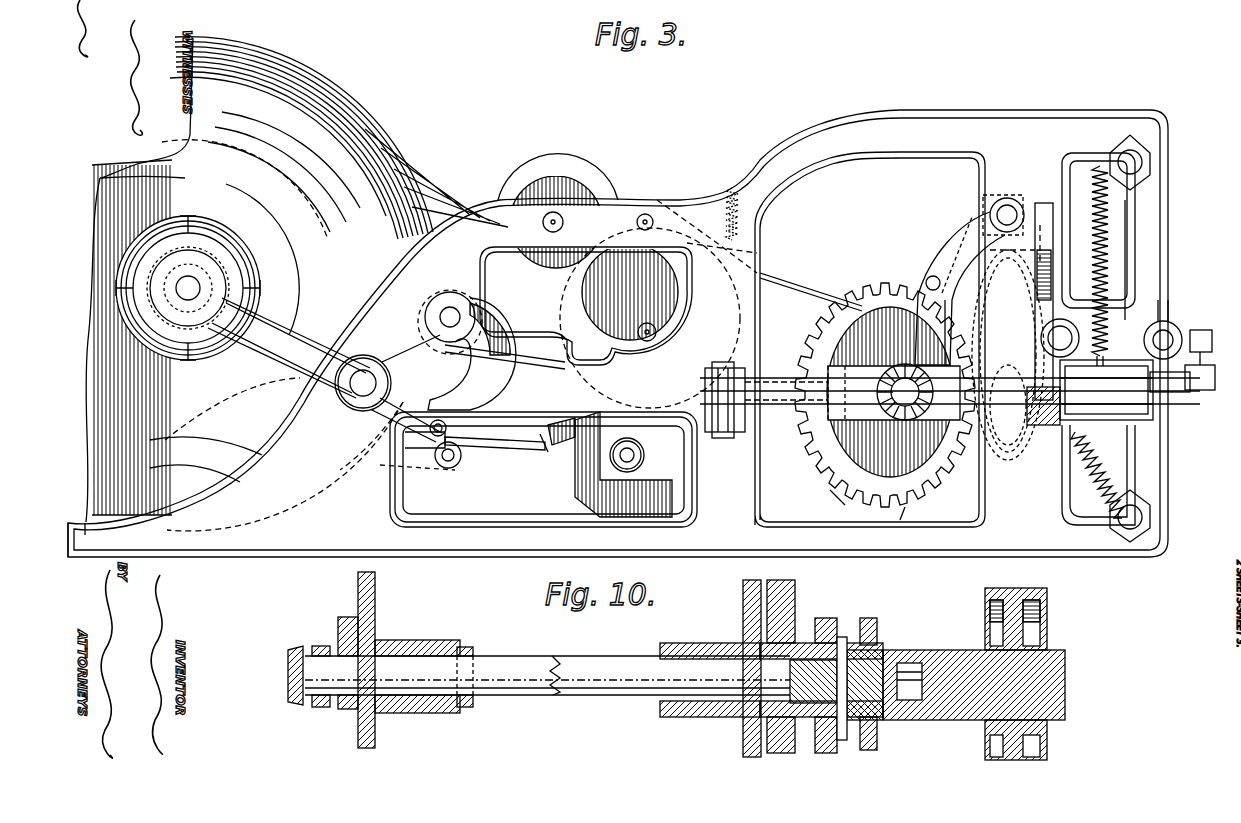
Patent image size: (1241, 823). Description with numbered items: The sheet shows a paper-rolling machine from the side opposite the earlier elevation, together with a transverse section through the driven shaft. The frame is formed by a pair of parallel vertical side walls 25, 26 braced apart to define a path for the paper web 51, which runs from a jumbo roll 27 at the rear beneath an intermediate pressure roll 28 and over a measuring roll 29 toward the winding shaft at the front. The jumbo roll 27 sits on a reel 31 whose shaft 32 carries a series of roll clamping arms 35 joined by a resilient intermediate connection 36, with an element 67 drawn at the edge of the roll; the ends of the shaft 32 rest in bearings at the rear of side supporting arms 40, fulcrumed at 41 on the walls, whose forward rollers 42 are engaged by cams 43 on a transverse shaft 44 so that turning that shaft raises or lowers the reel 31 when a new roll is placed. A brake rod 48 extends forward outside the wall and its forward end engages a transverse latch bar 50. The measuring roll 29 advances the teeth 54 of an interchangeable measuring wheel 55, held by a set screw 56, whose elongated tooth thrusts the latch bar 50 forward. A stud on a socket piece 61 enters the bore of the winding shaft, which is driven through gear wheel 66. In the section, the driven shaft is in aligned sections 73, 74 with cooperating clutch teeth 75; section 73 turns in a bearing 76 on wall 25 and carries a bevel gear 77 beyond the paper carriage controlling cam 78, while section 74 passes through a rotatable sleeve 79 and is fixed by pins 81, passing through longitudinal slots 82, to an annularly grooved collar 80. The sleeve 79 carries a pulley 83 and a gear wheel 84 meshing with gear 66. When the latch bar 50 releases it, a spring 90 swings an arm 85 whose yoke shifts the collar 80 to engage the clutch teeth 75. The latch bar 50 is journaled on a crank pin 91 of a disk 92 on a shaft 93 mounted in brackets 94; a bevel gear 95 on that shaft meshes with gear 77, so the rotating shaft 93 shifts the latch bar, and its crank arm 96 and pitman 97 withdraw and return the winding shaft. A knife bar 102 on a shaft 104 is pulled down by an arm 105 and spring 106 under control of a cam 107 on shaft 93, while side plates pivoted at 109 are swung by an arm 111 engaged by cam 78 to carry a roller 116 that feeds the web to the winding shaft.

In FIG. 3, the side wall 25 is at (756, 156).
In FIG. 10, the side wall 25 is at (763, 624).
In FIG. 10, the side wall 26 is at (375, 608).
In FIG. 3, the jumbo roll 27 is at (337, 110).
In FIG. 3, the pressure roll 28 is at (594, 178).
In FIG. 3, the measuring roll 29 is at (660, 287).
In FIG. 3, the reel 31 is at (238, 235).
In FIG. 3, the reel shaft 32 is at (195, 286).
In FIG. 3, the roll clamping arms 35 is at (232, 284).
In FIG. 3, the resilient intermediate connection 36 is at (205, 232).
In FIG. 3, the side supporting arms 40 is at (358, 360).
In FIG. 3, the fulcrum 41 is at (362, 386).
In FIG. 3, the rollers 42 is at (430, 427).
In FIG. 3, the cams 43 is at (495, 330).
In FIG. 3, the transverse shaft 44 is at (438, 317).
In FIG. 3, the brake rod 48 is at (556, 352).
In FIG. 3, the latch bar 50 is at (732, 396).
In FIG. 3, the paper web 51 is at (852, 296).
In FIG. 3, the teeth 54 is at (537, 450).
In FIG. 3, the measuring wheel 55 is at (558, 486).
In FIG. 3, the set screw 56 is at (632, 457).
In FIG. 3, the socket piece 61 is at (1100, 348).
In FIG. 3, the gear wheel 66 is at (1063, 292).
In FIG. 3, the drum edge 67 is at (180, 200).
In FIG. 10, the driven shaft section 73 is at (500, 662).
In FIG. 10, the driven shaft section 74 is at (610, 662).
In FIG. 10, the clutch teeth 75 is at (562, 700).
In FIG. 10, the bearing 76 is at (411, 642).
In FIG. 3, the bevel gear 77 is at (833, 430).
In FIG. 10, the bevel gear 77 is at (297, 650).
In FIG. 3, the paper carriage controlling cam 78 is at (905, 408).
In FIG. 10, the paper carriage controlling cam 78 is at (343, 620).
In FIG. 10, the rotatable sleeve 79 is at (696, 650).
In FIG. 10, the annularly grooved collar 80 is at (866, 617).
In FIG. 10, the pins 81 is at (880, 640).
In FIG. 10, the longitudinal slots 82 is at (880, 716).
In FIG. 10, the pulley 83 is at (1040, 622).
In FIG. 3, the gear wheel 84 is at (856, 466).
In FIG. 10, the gear wheel 84 is at (792, 636).
In FIG. 3, the arm 85 is at (498, 452).
In FIG. 3, the spring 90 is at (507, 438).
In FIG. 3, the crank pin 91 is at (735, 433).
In FIG. 3, the disk 92 is at (735, 370).
In FIG. 3, the shaft 93 is at (995, 446).
In FIG. 3, the brackets 94 is at (980, 470).
In FIG. 3, the bevel gear 95 is at (924, 486).
In FIG. 3, the crank arm 96 is at (1200, 335).
In FIG. 3, the pitman 97 is at (1206, 342).
In FIG. 3, the knife bar 102 is at (1057, 262).
In FIG. 3, the shaft 104 is at (1102, 376).
In FIG. 3, the arm 105 is at (1120, 410).
In FIG. 3, the spring 106 is at (1085, 235).
In FIG. 3, the cam 107 is at (1042, 425).
In FIG. 3, the pivot 109 is at (990, 216).
In FIG. 3, the arm 111 is at (945, 247).
In FIG. 3, the roller 116 is at (1038, 260).